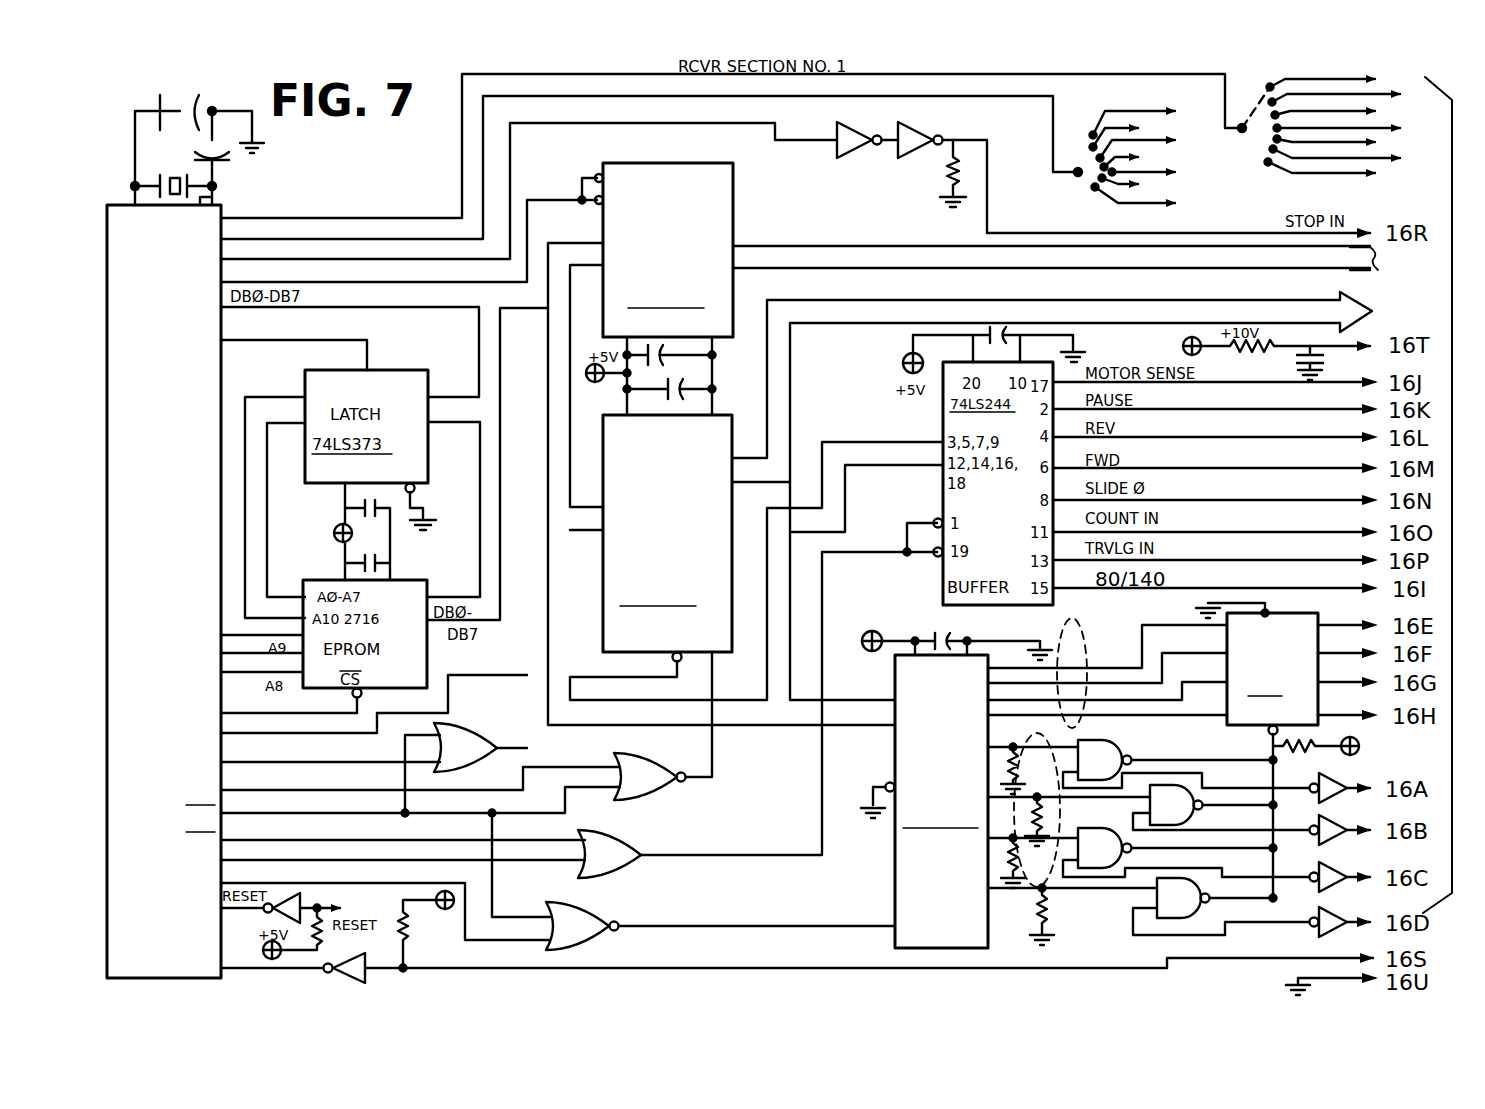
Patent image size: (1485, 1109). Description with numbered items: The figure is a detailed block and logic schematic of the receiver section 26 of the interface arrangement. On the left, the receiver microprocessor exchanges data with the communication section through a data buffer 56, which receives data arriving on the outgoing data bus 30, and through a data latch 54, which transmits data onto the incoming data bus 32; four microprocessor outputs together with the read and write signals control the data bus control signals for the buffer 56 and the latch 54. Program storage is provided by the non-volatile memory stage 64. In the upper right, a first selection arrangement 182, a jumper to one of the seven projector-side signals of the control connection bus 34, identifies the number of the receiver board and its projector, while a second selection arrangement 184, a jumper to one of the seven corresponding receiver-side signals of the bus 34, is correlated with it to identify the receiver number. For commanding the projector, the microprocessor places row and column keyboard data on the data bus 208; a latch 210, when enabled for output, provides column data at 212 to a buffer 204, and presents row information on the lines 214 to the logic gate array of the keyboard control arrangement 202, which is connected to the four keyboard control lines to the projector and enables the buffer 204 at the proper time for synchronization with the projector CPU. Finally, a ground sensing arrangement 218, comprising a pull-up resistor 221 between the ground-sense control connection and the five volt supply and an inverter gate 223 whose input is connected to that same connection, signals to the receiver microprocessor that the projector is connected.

The receiver section 26 is at (452, 150).
The data bus 30 is at (1381, 259).
The data bus 32 is at (1073, 387).
The control connection bus 34 is at (1298, 185).
The data latch 54 is at (735, 432).
The data buffer 56 is at (735, 212).
The non-volatile memory stage 64 is at (328, 492).
The first selection arrangement 182 is at (1280, 78).
The second selection arrangement 184 is at (1066, 182).
The keyboard control arrangement 202 is at (1122, 893).
The buffer 204 is at (1232, 725).
The data bus 208 is at (765, 728).
The latch 210 is at (895, 882).
The data at 212 is at (1063, 648).
The lines 214 is at (1030, 890).
The ground sensing arrangement 218 is at (406, 975).
The pull-up resistor 221 is at (410, 928).
The inverter gate 223 is at (355, 985).